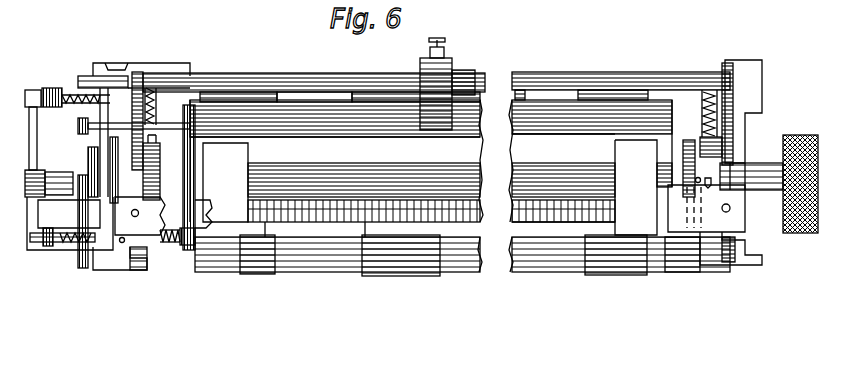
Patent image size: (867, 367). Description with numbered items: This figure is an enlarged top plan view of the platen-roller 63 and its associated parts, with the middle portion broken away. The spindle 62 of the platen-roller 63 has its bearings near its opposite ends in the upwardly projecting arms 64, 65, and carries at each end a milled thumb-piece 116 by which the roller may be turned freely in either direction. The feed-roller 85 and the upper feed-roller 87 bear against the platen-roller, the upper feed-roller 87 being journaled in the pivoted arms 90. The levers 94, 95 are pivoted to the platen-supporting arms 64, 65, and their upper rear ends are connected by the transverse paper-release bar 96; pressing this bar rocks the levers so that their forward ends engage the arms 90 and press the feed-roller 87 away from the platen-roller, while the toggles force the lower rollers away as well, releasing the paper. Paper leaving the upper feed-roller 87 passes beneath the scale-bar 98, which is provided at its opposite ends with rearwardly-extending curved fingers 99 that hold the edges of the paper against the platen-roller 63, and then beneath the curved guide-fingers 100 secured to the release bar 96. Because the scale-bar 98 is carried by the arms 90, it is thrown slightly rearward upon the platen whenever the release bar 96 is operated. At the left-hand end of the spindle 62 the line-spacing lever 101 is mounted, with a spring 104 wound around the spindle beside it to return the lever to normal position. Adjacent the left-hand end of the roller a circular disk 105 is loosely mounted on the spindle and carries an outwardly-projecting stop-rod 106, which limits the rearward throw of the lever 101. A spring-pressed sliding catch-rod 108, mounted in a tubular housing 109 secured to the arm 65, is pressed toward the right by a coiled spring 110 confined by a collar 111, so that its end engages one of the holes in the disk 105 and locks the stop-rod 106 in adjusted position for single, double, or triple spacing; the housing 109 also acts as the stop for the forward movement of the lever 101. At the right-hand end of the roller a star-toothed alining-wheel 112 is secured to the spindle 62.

The spindle 62 is at (773, 190).
The platen-roller 63 is at (336, 168).
The arm 64 is at (718, 153).
The arm 65 is at (153, 168).
The feed-roller 85 is at (243, 95).
The upper feed-roller 87 is at (424, 255).
The arm 90 is at (142, 262).
The lever 94 is at (727, 65).
The lever 95 is at (144, 76).
The paper-release bar 96 is at (315, 85).
The scale-bar 98 is at (548, 207).
The curved finger 99 is at (430, 187).
The guide-finger 100 is at (440, 125).
The lever 101 is at (88, 80).
The spring 104 is at (86, 168).
The circular disk 105 is at (198, 162).
The stop-rod 106 is at (78, 128).
The sliding catch-rod 108 is at (64, 247).
The tubular housing 109 is at (84, 250).
The coiled spring 110 is at (140, 216).
The collar 111 is at (182, 247).
The star-toothed alining-wheel 112 is at (680, 183).
The milled thumb-piece 116 is at (805, 233).